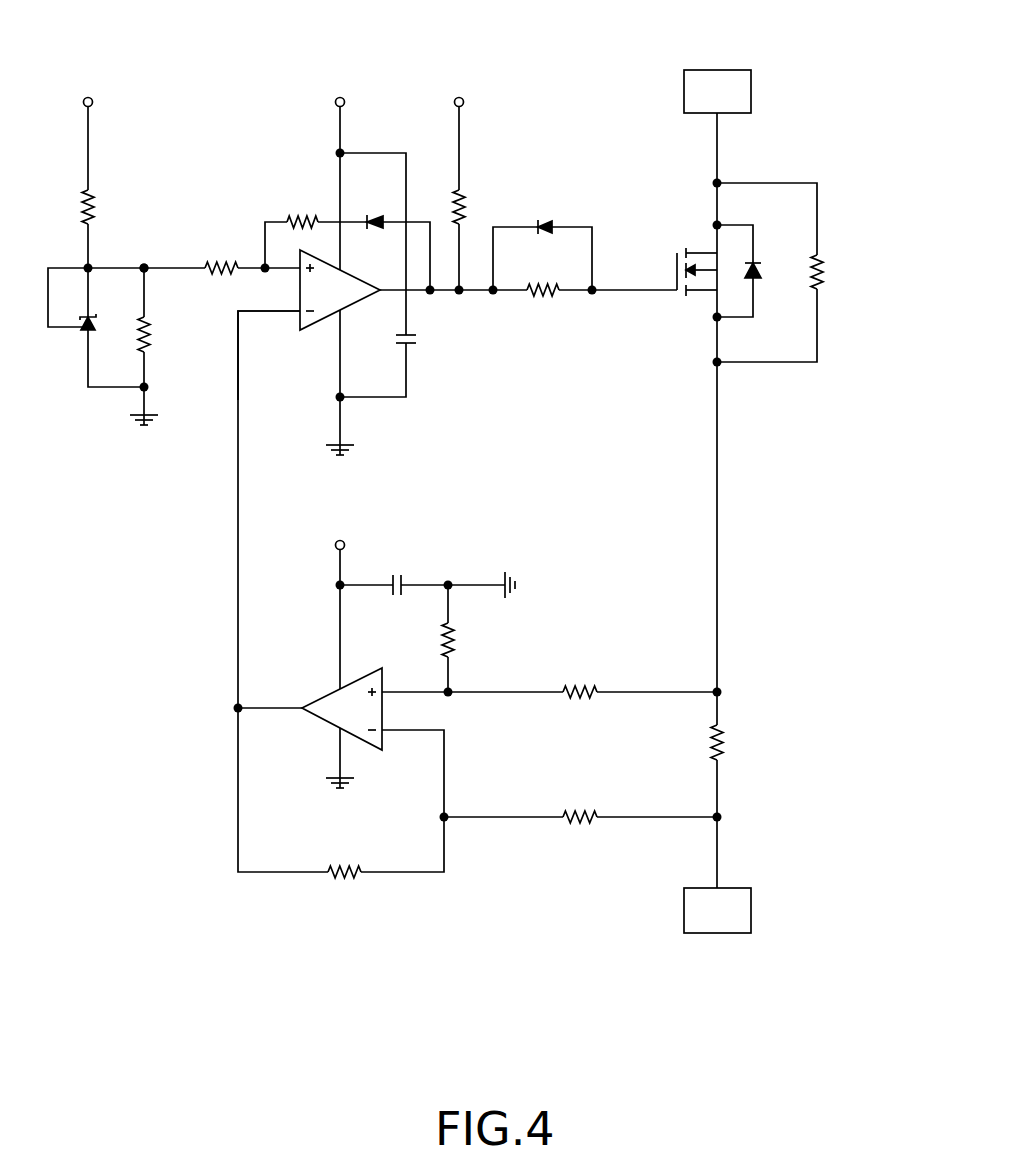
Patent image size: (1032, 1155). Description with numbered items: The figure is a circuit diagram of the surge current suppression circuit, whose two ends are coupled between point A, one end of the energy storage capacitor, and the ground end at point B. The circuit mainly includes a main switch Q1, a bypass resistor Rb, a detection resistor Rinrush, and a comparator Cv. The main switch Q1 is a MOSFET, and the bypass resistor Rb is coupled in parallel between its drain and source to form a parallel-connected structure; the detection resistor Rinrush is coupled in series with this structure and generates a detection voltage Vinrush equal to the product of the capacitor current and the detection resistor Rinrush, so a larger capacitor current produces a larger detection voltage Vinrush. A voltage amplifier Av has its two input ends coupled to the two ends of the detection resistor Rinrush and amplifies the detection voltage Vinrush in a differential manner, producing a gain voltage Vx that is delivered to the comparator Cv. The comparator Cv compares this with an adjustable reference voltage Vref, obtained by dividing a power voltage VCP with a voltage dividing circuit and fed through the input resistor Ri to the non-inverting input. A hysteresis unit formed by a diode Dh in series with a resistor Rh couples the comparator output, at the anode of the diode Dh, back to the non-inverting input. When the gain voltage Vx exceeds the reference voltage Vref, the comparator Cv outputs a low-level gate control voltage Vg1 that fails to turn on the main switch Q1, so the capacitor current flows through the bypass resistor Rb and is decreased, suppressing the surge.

The power voltage VCP is at (275, 307).
The reference voltage Vref is at (140, 253).
The input resistor Ri is at (221, 255).
The resistor Rh is at (302, 207).
The diode Dh is at (370, 207).
The comparator Cv is at (300, 289).
The gain voltage Vx is at (269, 355).
The gate control voltage Vg1 is at (618, 276).
The main switch Q1 is at (733, 264).
The bypass resistor Rb is at (788, 272).
The point A is at (717, 91).
The point B is at (717, 910).
The voltage amplifier Av is at (327, 703).
The detection resistor Rinrush is at (756, 743).
The detection voltage Vinrush is at (849, 752).